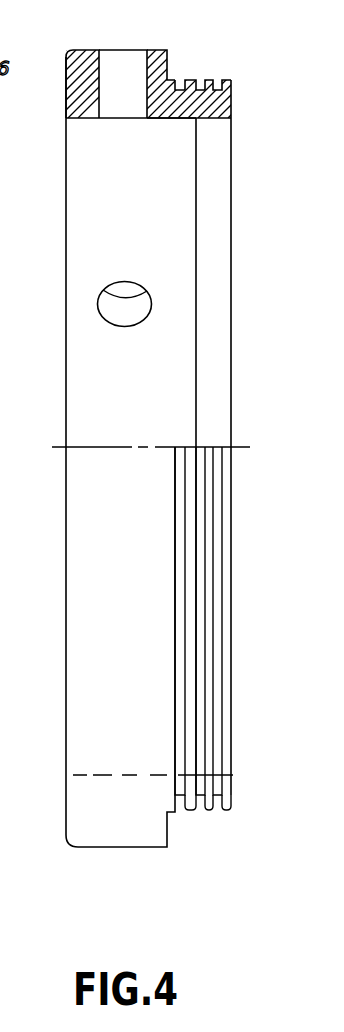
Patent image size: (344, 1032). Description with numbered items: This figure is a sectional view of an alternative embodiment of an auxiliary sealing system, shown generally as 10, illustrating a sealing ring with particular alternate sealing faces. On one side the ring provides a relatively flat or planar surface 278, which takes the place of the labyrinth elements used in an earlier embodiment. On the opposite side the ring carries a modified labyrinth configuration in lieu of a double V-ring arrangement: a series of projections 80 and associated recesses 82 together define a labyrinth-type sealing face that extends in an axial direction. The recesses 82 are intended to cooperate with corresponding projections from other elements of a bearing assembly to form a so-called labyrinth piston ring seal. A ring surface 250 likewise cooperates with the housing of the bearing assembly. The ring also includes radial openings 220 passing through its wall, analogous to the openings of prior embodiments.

The coupling body 10 is at (25, 237).
The flat or planar surface 278 is at (66, 87).
The radial openings 220 is at (148, 26).
The ring surface 250 is at (173, 80).
The projections 80 is at (180, 88).
The recesses 82 is at (200, 88).